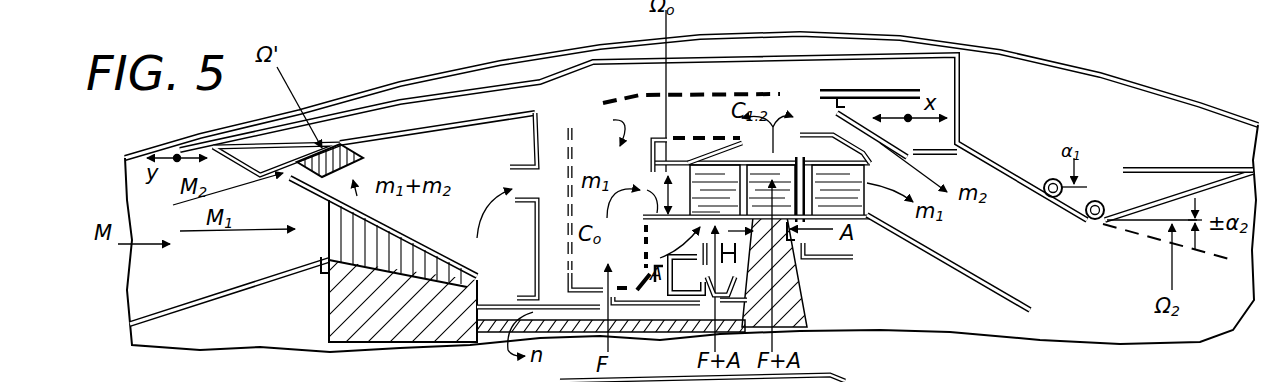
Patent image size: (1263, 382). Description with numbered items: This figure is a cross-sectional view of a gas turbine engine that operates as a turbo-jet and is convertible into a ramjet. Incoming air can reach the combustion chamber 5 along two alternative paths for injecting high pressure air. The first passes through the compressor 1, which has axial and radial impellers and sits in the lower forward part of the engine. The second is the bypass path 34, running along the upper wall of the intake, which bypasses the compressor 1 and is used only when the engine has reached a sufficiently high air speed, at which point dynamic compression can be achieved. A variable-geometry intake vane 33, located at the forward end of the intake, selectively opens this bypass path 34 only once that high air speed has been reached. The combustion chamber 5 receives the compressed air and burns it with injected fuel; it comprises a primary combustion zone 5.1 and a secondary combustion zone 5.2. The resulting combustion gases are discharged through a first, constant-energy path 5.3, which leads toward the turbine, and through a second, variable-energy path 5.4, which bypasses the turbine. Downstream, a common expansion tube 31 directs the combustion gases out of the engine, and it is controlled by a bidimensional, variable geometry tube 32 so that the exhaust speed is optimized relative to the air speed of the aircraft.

The compressor 1 is at (329, 306).
The common expansion tube 31 is at (1010, 190).
The bidimensional variable geometry tube 32 is at (1097, 200).
The variable-geometry intake vane 33 is at (342, 147).
The bypass path 34 is at (397, 137).
The combustion chamber 5 is at (583, 130).
The primary combustion zone 5.1 is at (580, 247).
The secondary combustion zone 5.2 is at (790, 107).
The constant-energy path 5.3 is at (648, 226).
The variable-energy path 5.4 is at (860, 120).